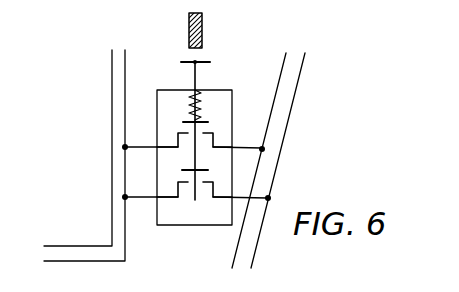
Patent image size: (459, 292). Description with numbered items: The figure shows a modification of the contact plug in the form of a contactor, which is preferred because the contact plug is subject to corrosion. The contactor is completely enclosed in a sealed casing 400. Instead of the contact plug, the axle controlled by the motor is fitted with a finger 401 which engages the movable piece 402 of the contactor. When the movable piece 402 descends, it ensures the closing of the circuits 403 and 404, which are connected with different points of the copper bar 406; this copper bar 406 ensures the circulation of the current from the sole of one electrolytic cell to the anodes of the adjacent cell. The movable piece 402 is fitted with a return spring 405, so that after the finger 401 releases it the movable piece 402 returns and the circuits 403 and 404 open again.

The sealed casing 400 is at (239, 133).
The finger 401 is at (189, 26).
The movable piece 402 is at (210, 61).
The circuit 403 is at (175, 158).
The circuit 404 is at (204, 199).
The return spring 405 is at (196, 101).
The copper bar 406 is at (112, 175).